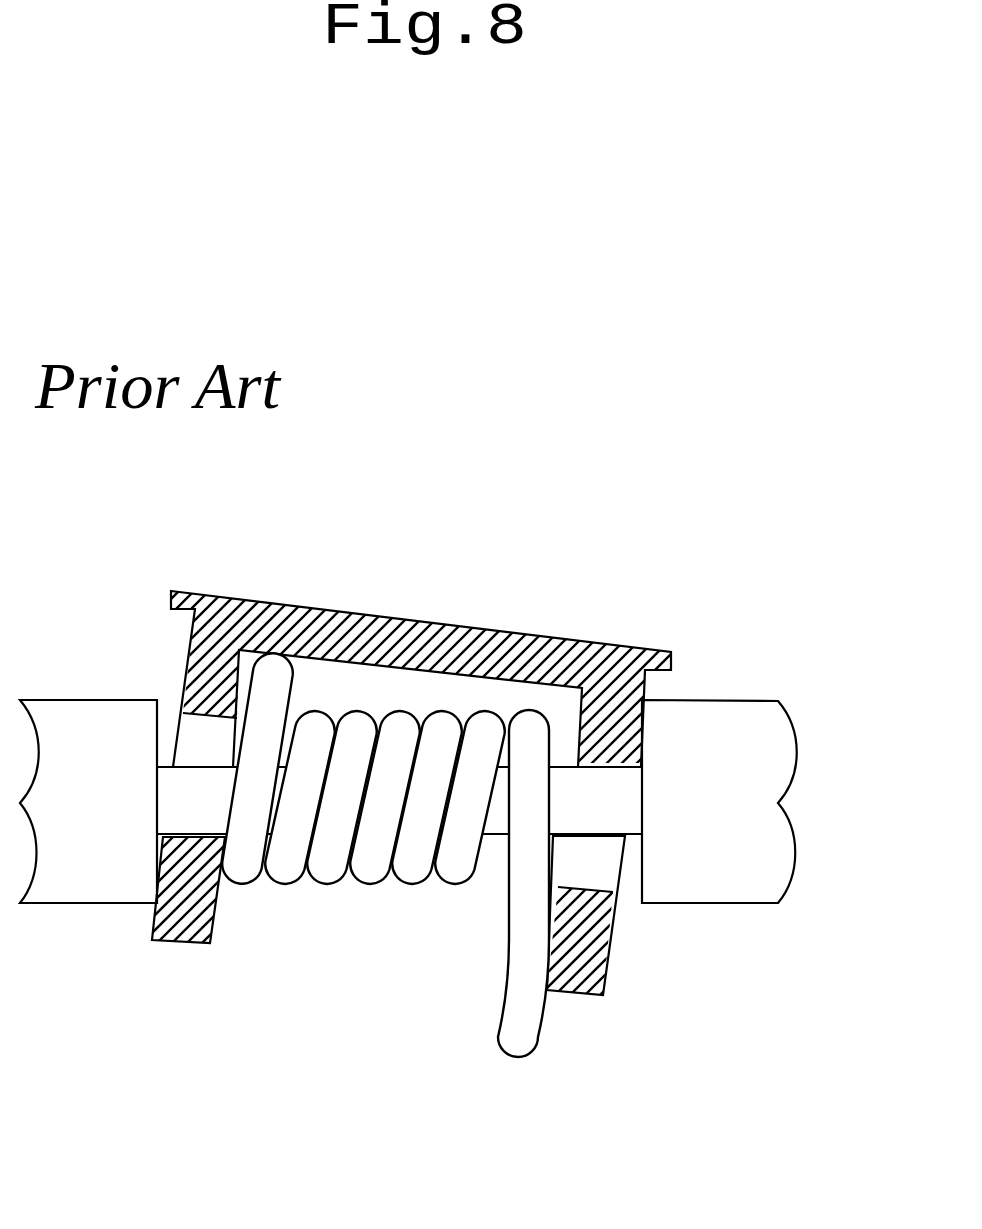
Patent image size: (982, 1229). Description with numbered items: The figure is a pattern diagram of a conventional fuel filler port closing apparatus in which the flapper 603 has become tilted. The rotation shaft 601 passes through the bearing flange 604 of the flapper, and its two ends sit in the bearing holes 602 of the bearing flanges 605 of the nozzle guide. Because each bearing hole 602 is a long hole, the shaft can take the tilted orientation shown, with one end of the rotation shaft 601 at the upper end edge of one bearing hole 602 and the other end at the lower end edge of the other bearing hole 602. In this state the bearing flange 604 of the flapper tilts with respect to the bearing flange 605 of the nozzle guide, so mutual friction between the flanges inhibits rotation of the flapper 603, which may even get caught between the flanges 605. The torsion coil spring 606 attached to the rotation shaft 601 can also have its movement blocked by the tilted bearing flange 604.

The rotation shaft 601 is at (562, 802).
The bearing hole 602 is at (603, 865).
The flapper 603 is at (302, 628).
The bearing flange 604 is at (195, 898).
The bearing flange 605 is at (713, 795).
The torsion coil spring 606 is at (358, 728).